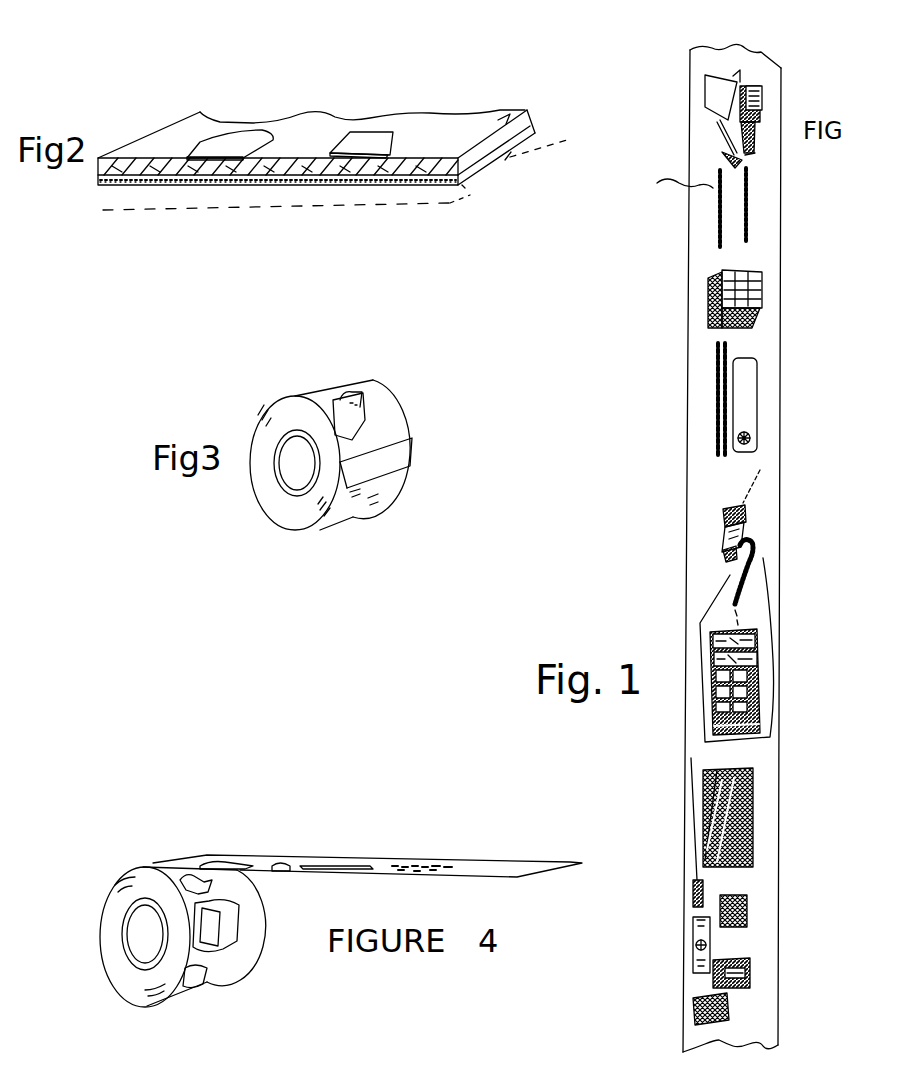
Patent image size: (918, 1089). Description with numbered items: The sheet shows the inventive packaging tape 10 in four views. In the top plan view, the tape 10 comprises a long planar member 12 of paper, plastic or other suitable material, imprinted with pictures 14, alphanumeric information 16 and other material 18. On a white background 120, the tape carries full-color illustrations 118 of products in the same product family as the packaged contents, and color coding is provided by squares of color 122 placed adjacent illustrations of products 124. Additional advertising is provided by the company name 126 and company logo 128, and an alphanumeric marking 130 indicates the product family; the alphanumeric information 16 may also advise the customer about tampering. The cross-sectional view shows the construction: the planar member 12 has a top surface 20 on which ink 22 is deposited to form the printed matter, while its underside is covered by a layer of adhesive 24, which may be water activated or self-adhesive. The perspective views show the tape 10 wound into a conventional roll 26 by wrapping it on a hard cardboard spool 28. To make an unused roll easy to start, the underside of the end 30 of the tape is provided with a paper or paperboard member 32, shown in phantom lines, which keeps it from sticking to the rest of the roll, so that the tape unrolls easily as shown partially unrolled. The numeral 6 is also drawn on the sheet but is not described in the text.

In FIG. 1, the strip bottom portion 6 is at (698, 952).
In FIG. 2, the tape 10 is at (484, 170).
In FIG. 3, the tape 10 is at (393, 410).
In FIG. 4, the tape 10 is at (307, 867).
In FIG. 1, the tape 10 is at (687, 133).
In FIG. 1, the planar member 12 is at (758, 640).
In FIG. 3, the pictures 14 is at (360, 407).
In FIG. 1, the pictures 14 is at (760, 153).
In FIG. 1, the alphanumeric information 16 is at (760, 229).
In FIG. 3, the other material 18 is at (373, 490).
In FIG. 2, the top surface 20 is at (162, 143).
In FIG. 1, the top surface 20 is at (710, 483).
In FIG. 2, the ink 22 is at (237, 142).
In FIG. 2, the layer of adhesive 24 is at (131, 180).
In FIG. 3, the roll 26 is at (258, 380).
In FIG. 4, the roll 26 is at (100, 882).
In FIG. 3, the hard cardboard spool 28 is at (287, 483).
In FIG. 3, the end of tape 30 is at (400, 457).
In FIG. 2, the paper or paperboard member 32 is at (554, 144).
In FIG. 1, the illustrations 118 is at (760, 83).
In FIG. 1, the background 120 is at (700, 220).
In FIG. 1, the squares of color 122 is at (750, 320).
In FIG. 1, the illustrations of products 124 is at (726, 272).
In FIG. 1, the company name 126 is at (765, 383).
In FIG. 1, the company logo 128 is at (757, 440).
In FIG. 1, the marking 130 is at (710, 403).